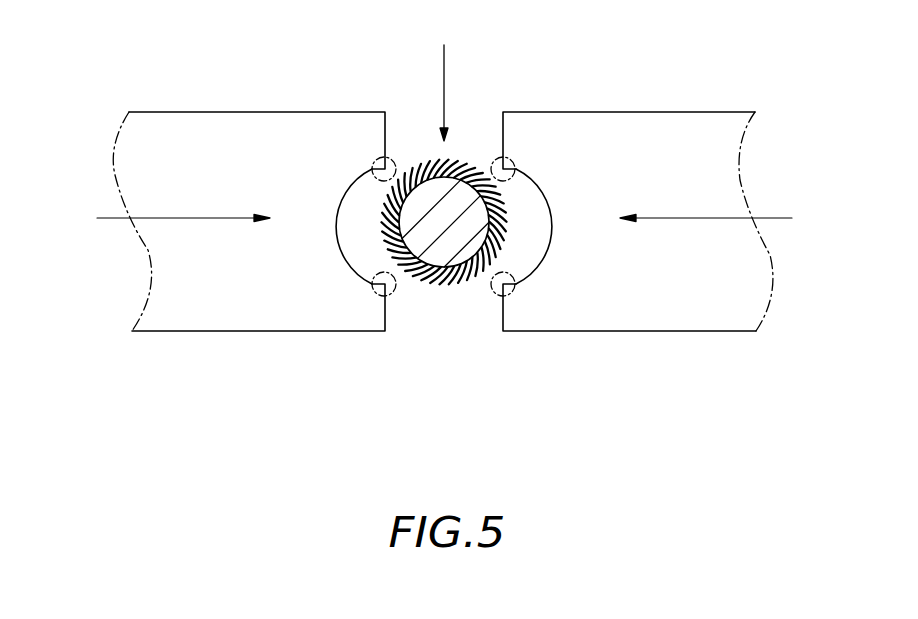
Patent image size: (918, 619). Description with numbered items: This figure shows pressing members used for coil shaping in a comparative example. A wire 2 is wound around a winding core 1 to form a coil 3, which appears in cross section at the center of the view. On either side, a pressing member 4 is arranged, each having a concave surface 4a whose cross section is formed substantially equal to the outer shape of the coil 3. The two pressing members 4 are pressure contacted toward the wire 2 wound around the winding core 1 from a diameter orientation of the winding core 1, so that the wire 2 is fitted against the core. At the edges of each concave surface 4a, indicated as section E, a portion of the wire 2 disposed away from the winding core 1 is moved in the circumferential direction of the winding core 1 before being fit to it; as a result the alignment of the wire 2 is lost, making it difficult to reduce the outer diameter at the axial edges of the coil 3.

The winding core 1 is at (452, 265).
The wire 2 is at (422, 276).
The coil 3 is at (444, 80).
The pressing member 4 is at (198, 112).
The concave surface 4a is at (340, 212).
The section at edges of concave surface E is at (378, 158).